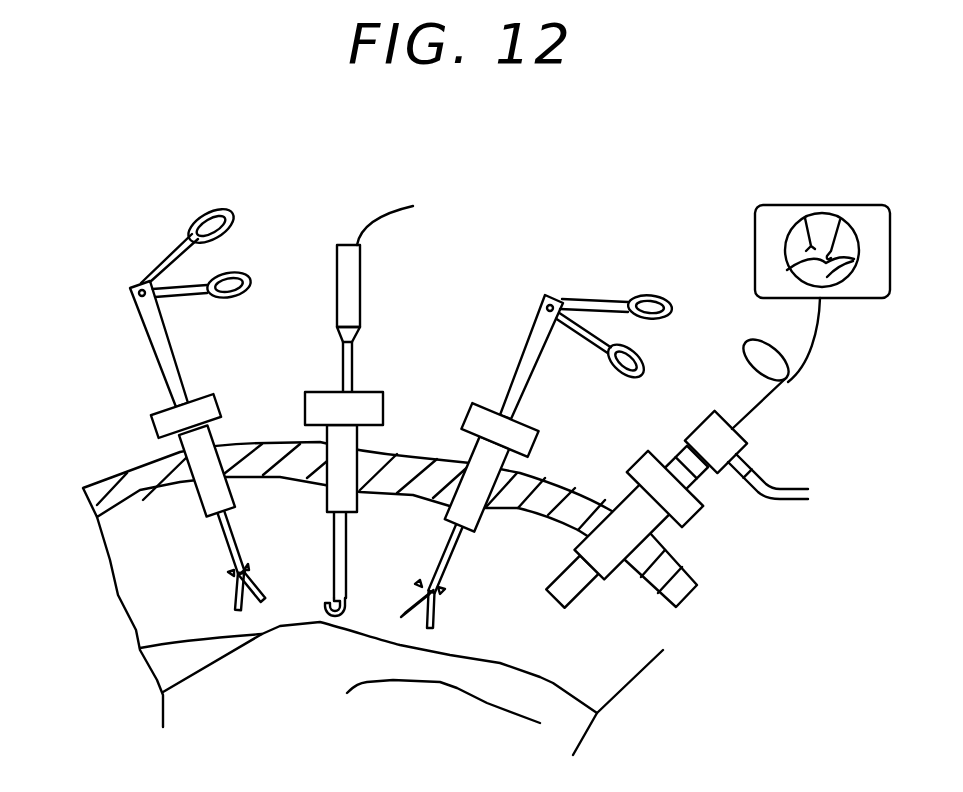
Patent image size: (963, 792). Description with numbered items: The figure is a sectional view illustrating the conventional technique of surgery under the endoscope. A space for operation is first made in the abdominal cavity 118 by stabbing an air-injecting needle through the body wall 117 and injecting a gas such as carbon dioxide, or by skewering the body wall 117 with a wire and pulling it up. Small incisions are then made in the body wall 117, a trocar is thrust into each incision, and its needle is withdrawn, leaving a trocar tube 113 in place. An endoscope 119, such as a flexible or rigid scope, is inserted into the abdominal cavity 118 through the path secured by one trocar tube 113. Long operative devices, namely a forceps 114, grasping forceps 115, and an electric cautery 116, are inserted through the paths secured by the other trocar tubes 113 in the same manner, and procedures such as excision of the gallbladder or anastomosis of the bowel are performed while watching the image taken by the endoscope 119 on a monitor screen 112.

The monitor 112 is at (806, 205).
The trocar tube 113 is at (305, 394).
The forceps 114 is at (148, 335).
The grasping forceps 115 is at (530, 337).
The electric cautery 116 is at (342, 282).
The body wall 117 is at (653, 582).
The abdominal cavity 118 is at (187, 578).
The endoscope 119 is at (749, 441).